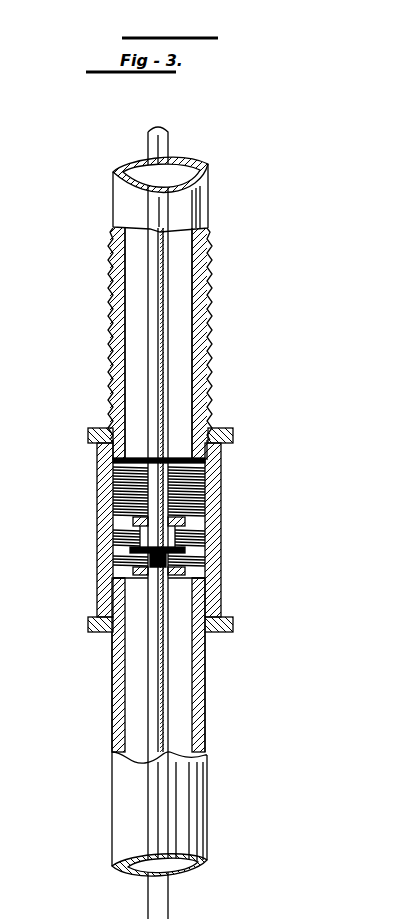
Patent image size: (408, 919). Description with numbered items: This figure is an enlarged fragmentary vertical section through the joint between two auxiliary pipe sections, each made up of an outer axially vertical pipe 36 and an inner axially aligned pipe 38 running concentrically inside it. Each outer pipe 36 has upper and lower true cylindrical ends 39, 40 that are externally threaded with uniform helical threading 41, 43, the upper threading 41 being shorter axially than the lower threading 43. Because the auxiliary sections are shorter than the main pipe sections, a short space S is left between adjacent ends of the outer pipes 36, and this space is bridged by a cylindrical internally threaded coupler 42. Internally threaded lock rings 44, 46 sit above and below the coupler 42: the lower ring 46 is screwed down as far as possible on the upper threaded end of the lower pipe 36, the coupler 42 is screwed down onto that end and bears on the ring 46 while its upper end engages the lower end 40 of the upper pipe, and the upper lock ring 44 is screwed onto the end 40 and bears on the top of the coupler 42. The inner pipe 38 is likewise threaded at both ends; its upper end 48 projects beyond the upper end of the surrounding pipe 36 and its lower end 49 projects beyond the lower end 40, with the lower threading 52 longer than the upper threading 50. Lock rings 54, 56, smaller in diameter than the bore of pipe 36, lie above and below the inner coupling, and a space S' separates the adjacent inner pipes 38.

The outer pipe 36 is at (192, 810).
The inner pipe 38 is at (162, 150).
The upper cylindrical end 39 is at (206, 640).
The lower cylindrical end 40 is at (212, 342).
The upper threading 41 is at (222, 600).
The coupler 42 is at (98, 548).
The lower threading 43 is at (208, 386).
The upper lock ring 44 is at (90, 430).
The lower lock ring 46 is at (88, 626).
The upper end of inner pipe 48 is at (155, 570).
The lower end of inner pipe 49 is at (206, 497).
The upper threading 50 is at (152, 582).
The lower threading 52 is at (210, 470).
The upper lock ring 54 is at (186, 523).
The lower lock ring 56 is at (186, 571).
The space S is at (124, 494).
The space S' is at (121, 566).